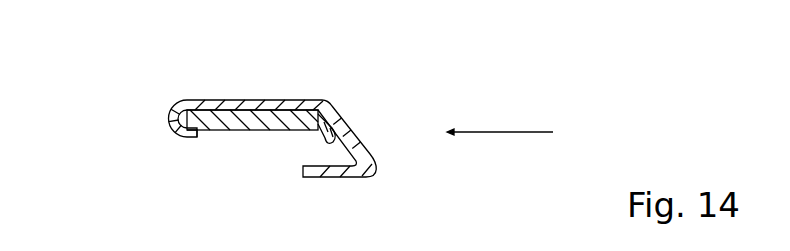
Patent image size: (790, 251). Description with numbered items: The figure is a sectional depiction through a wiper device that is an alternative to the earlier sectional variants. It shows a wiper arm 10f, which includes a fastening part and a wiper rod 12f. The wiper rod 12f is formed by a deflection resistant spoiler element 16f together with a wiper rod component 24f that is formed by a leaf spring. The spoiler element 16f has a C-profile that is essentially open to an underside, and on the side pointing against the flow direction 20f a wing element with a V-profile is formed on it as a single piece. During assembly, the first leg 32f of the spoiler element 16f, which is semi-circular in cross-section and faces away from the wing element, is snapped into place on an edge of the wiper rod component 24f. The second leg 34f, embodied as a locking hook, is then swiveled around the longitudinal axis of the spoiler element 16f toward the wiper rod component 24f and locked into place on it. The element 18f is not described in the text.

The wiper arm 10f is at (227, 91).
The wiper rod 12f is at (255, 101).
The spoiler element 16f is at (362, 117).
The inner body 18f is at (309, 140).
The flow direction 20f is at (500, 132).
The wiper rod component 24f is at (175, 115).
The first leg 32f is at (190, 130).
The second leg 34f is at (335, 137).